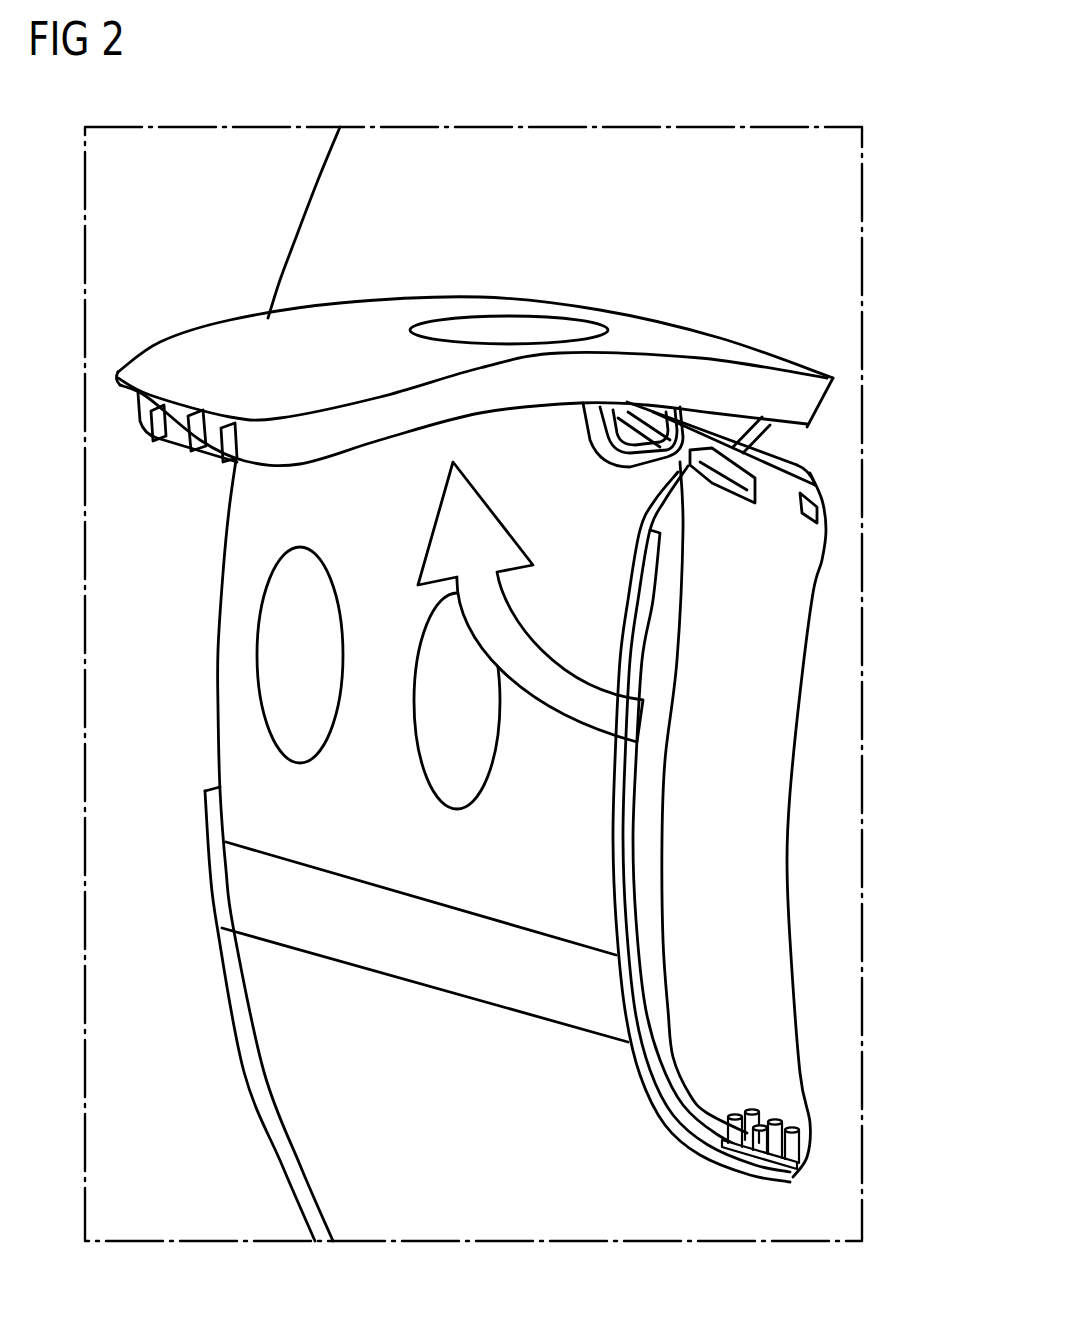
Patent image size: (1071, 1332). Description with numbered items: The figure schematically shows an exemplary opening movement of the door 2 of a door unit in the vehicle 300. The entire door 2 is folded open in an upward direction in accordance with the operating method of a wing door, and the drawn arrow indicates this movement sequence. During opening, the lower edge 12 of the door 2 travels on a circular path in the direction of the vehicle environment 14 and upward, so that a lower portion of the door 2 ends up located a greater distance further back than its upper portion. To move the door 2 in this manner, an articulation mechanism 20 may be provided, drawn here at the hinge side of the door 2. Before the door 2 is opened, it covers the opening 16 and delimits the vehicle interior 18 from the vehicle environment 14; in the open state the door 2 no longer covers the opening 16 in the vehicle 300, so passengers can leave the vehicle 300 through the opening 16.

The door 2 is at (113, 377).
The lower edge 12 is at (116, 388).
The vehicle environment 14 is at (170, 189).
The opening 16 is at (767, 872).
The vehicle interior 18 is at (755, 642).
The articulation mechanism 20 is at (807, 484).
The vehicle 300 is at (850, 272).